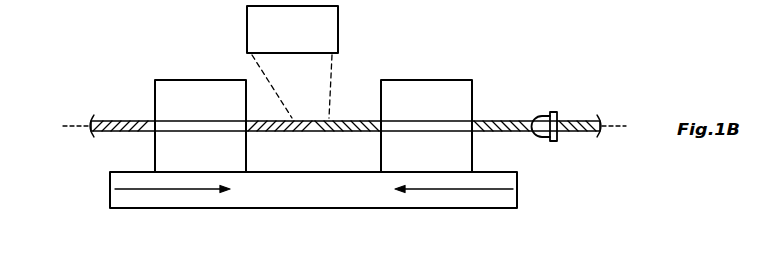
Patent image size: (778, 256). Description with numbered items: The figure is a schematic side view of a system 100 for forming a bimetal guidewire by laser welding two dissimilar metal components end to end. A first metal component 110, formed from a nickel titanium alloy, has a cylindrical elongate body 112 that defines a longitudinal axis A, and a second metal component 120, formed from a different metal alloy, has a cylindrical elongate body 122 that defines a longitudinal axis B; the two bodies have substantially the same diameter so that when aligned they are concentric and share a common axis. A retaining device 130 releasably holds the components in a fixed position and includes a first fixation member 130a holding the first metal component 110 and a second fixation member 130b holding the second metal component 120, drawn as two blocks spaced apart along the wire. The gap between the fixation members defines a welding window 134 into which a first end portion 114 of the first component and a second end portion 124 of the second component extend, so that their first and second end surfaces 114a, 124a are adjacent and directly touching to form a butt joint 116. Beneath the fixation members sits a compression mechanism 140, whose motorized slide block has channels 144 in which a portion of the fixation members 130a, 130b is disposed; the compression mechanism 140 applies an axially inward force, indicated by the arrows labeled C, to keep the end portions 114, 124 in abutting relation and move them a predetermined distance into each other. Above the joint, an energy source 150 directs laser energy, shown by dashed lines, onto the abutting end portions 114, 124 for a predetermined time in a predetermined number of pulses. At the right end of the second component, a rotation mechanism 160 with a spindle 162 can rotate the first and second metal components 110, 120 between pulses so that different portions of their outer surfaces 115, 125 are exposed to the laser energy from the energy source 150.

The system 100 is at (70, 45).
The first metal component 110 is at (97, 105).
The cylindrical elongate body 112 is at (143, 120).
The first end portion 114 is at (299, 120).
The first end surface 114a is at (309, 132).
The outer surface 115 is at (120, 132).
The joint 116 is at (318, 175).
The second metal component 120 is at (518, 105).
The cylindrical elongate body 122 is at (520, 133).
The second end portion 124 is at (350, 120).
The second end surface 124a is at (314, 132).
The outer surface 125 is at (505, 133).
The retaining device 130 is at (440, 68).
The first fixation member 130a is at (214, 135).
The second fixation member 130b is at (439, 135).
The welding window 134 is at (275, 175).
The compression mechanism 140 is at (157, 220).
The channels 144 is at (513, 6).
The energy source 150 is at (303, 39).
The rotation mechanism 160 is at (572, 95).
The spindle 162 is at (552, 141).